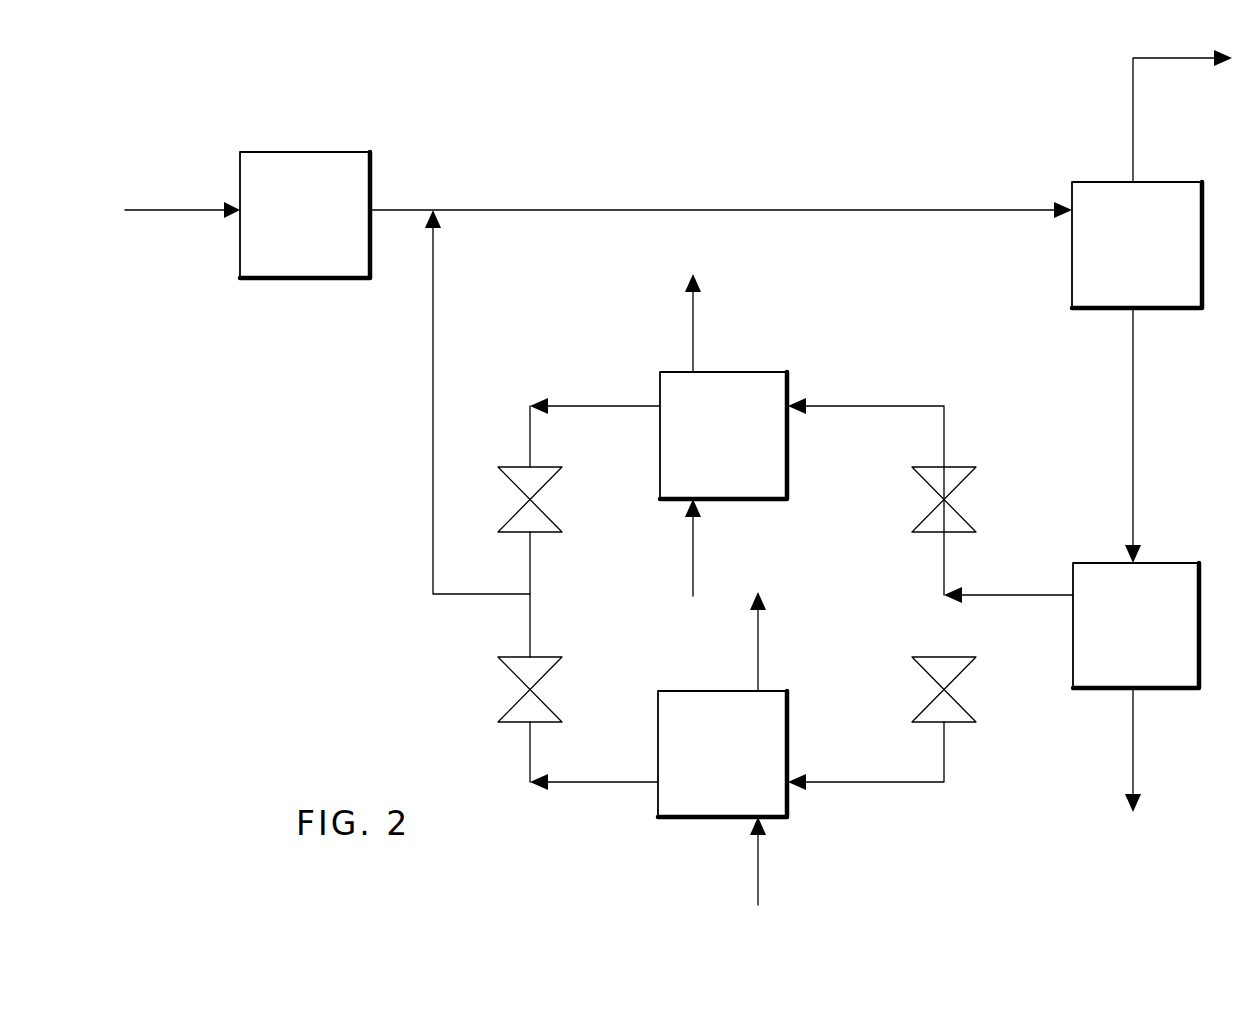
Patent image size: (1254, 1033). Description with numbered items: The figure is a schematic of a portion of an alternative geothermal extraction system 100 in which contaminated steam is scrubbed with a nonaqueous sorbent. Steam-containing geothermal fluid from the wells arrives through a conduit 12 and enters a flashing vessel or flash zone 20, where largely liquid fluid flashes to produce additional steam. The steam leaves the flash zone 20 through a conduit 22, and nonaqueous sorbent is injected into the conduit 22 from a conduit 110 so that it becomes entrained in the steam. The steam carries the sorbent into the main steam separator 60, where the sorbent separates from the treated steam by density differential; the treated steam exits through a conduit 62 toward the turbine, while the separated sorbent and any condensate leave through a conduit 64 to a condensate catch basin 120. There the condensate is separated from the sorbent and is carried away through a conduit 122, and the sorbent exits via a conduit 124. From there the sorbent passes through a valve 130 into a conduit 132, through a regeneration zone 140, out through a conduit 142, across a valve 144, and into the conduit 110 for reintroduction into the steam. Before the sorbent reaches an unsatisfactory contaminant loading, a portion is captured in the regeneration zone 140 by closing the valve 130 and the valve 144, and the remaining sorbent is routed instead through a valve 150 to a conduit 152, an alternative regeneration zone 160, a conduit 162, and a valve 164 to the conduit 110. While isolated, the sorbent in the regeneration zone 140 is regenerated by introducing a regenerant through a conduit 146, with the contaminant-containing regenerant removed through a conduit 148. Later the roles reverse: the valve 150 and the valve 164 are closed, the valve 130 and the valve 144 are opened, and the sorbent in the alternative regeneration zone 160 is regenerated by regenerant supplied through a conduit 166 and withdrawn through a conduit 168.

The system 100 is at (765, 112).
The conduit 12 is at (167, 208).
The flashing vessel or zone 20 is at (305, 215).
The conduit 22 is at (679, 210).
The main steam separator 60 is at (1137, 245).
The conduit 62 is at (1133, 121).
The conduit 64 is at (1134, 375).
The conduit 110 is at (430, 420).
The condensate catch basin 120 is at (1136, 625).
The conduit 122 is at (1134, 745).
The conduit 124 is at (992, 597).
The valve 130 is at (926, 514).
The conduit 132 is at (886, 407).
The regeneration zone 140 is at (723, 435).
The conduit 142 is at (628, 404).
The valve 144 is at (552, 516).
The conduit 146 is at (694, 553).
The conduit 148 is at (694, 330).
The valve 150 is at (926, 708).
The conduit 152 is at (878, 784).
The alternative regeneration zone 160 is at (722, 754).
The conduit 162 is at (636, 784).
The valve 164 is at (510, 678).
The conduit 166 is at (760, 870).
The conduit 168 is at (756, 644).